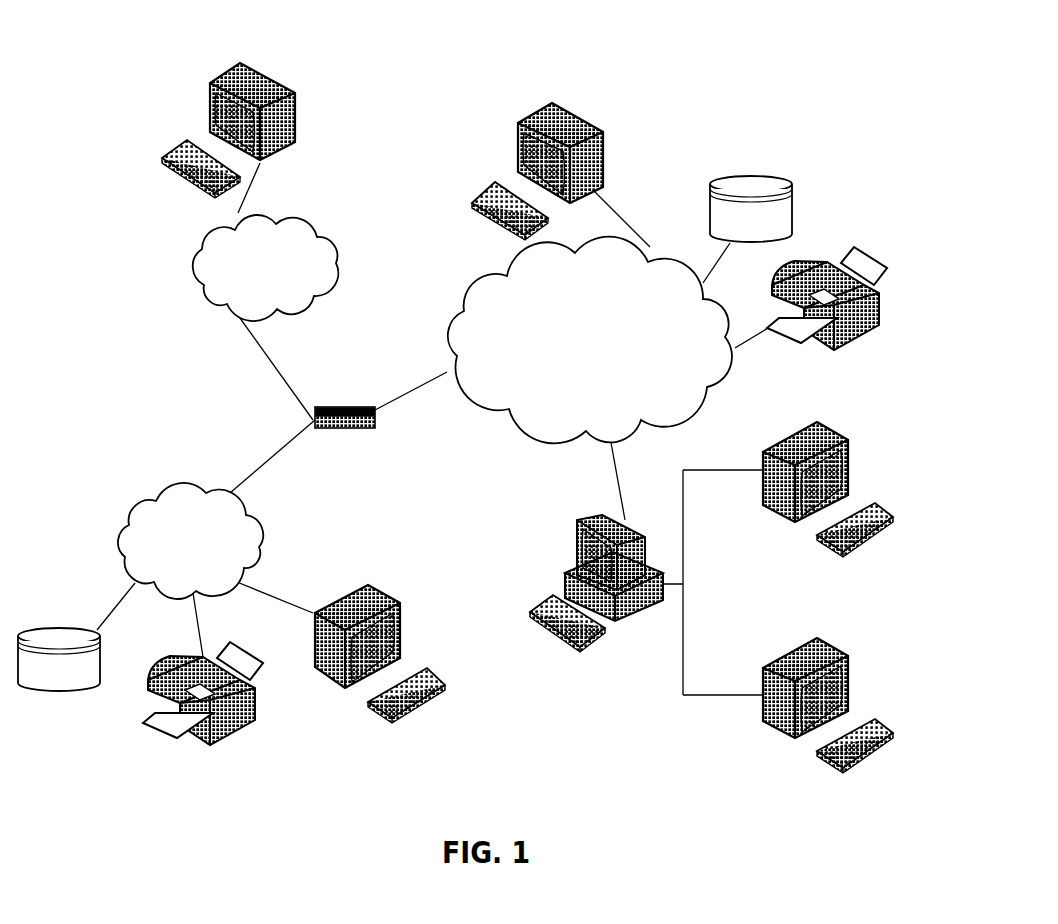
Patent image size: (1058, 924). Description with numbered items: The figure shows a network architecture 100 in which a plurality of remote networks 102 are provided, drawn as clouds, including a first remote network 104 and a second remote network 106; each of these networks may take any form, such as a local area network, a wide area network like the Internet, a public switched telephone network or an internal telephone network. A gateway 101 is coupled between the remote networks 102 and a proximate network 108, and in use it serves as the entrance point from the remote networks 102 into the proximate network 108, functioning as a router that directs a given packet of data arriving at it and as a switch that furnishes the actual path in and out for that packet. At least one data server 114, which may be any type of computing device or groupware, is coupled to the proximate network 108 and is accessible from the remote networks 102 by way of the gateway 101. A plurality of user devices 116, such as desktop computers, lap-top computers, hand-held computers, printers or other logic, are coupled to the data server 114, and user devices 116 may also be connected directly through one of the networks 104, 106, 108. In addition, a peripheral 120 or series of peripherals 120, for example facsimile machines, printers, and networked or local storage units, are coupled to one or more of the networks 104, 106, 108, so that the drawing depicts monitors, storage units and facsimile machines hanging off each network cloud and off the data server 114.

The architecture 100 is at (132, 40).
The gateway 101 is at (327, 400).
The remote networks 102 is at (156, 322).
The first remote network 104 is at (118, 517).
The second remote network 106 is at (338, 236).
The proximate network 108 is at (699, 408).
The data server 114 is at (577, 538).
The user devices 116 is at (296, 102).
The peripheral 120 is at (793, 185).